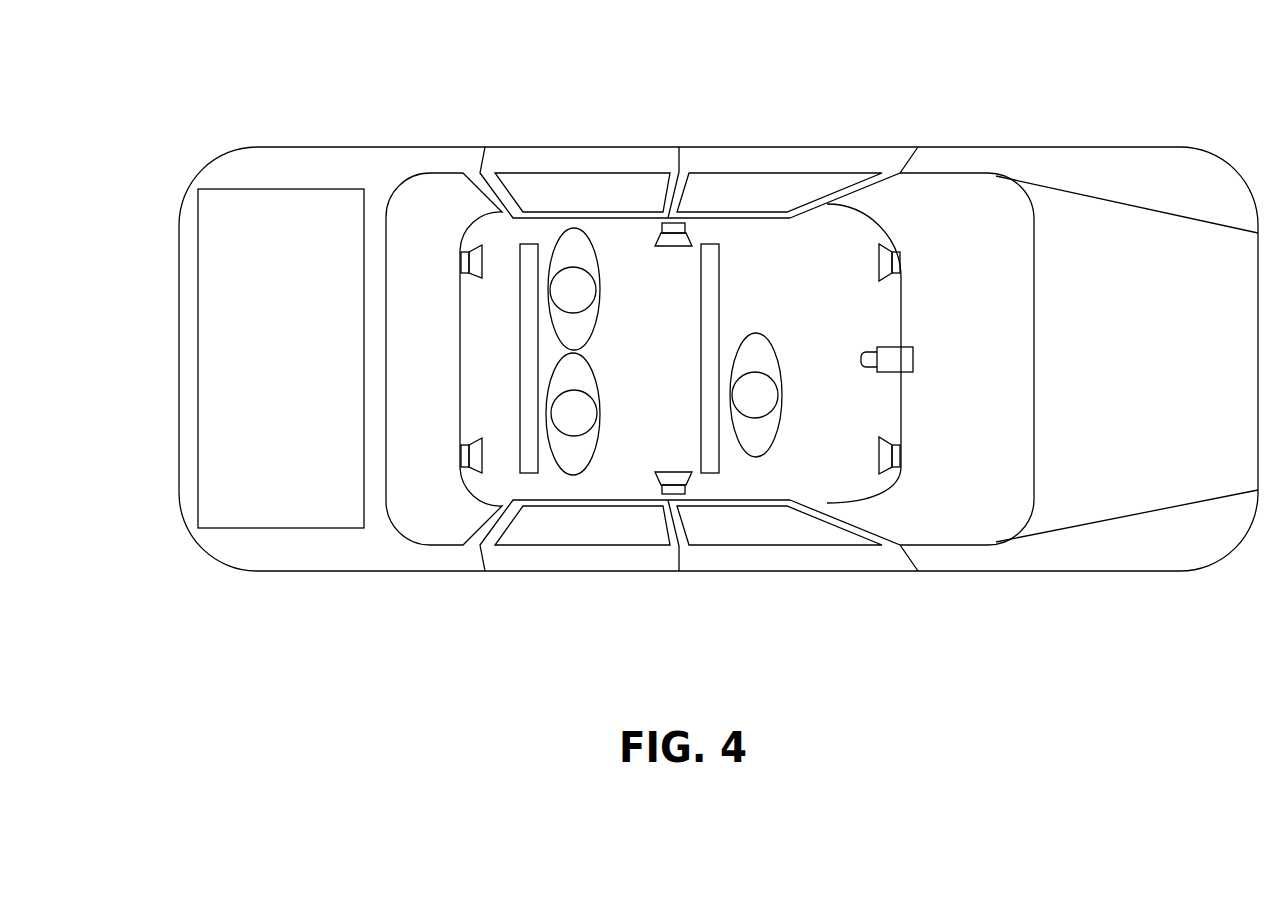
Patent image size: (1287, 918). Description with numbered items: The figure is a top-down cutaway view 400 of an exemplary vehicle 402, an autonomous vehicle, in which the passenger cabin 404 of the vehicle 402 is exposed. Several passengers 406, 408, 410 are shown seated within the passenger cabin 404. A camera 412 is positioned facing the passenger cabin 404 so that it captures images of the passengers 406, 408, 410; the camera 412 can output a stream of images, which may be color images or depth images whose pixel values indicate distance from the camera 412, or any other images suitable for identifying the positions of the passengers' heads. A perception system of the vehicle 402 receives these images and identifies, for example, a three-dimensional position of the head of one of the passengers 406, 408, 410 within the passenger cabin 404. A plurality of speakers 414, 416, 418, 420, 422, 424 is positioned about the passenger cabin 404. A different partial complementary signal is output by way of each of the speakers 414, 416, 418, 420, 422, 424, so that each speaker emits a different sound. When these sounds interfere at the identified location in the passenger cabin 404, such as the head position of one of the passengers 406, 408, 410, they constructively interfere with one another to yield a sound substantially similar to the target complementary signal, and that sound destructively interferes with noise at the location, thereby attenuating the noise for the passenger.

The top-down cutaway view 400 is at (341, 66).
The vehicle 402 is at (1105, 147).
The passenger cabin 404 is at (854, 228).
The passenger 406 is at (588, 362).
The passenger 408 is at (597, 291).
The passenger 410 is at (760, 336).
The camera 412 is at (913, 358).
The speaker 414 is at (897, 262).
The speaker 416 is at (897, 455).
The speaker 418 is at (667, 494).
The speaker 420 is at (463, 455).
The speaker 422 is at (463, 262).
The speaker 424 is at (673, 226).